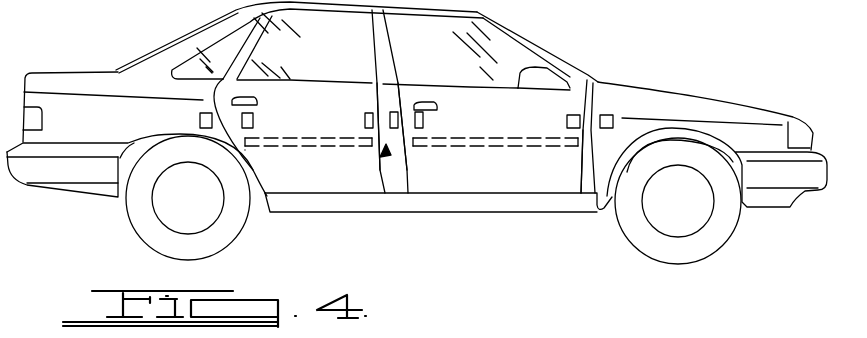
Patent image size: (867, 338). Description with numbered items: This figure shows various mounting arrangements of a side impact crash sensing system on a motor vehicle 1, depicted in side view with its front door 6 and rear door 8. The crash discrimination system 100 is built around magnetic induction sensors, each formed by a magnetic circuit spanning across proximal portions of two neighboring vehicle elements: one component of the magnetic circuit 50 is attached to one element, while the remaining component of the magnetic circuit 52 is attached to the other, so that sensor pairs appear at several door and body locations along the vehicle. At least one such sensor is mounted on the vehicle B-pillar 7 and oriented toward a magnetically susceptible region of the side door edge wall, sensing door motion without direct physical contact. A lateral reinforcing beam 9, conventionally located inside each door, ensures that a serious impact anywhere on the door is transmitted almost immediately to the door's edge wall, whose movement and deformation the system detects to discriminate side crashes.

The vehicle 1 is at (712, 93).
The front door 6 is at (595, 163).
The vehicle B-pillar 7 is at (397, 180).
The rear door 8 is at (207, 133).
The lateral reinforcing beam 9 is at (296, 144).
The component of the magnetic circuit 50 is at (200, 118).
The remaining component of the magnetic circuit 52 is at (253, 119).
The crash discrimination system 100 is at (386, 150).